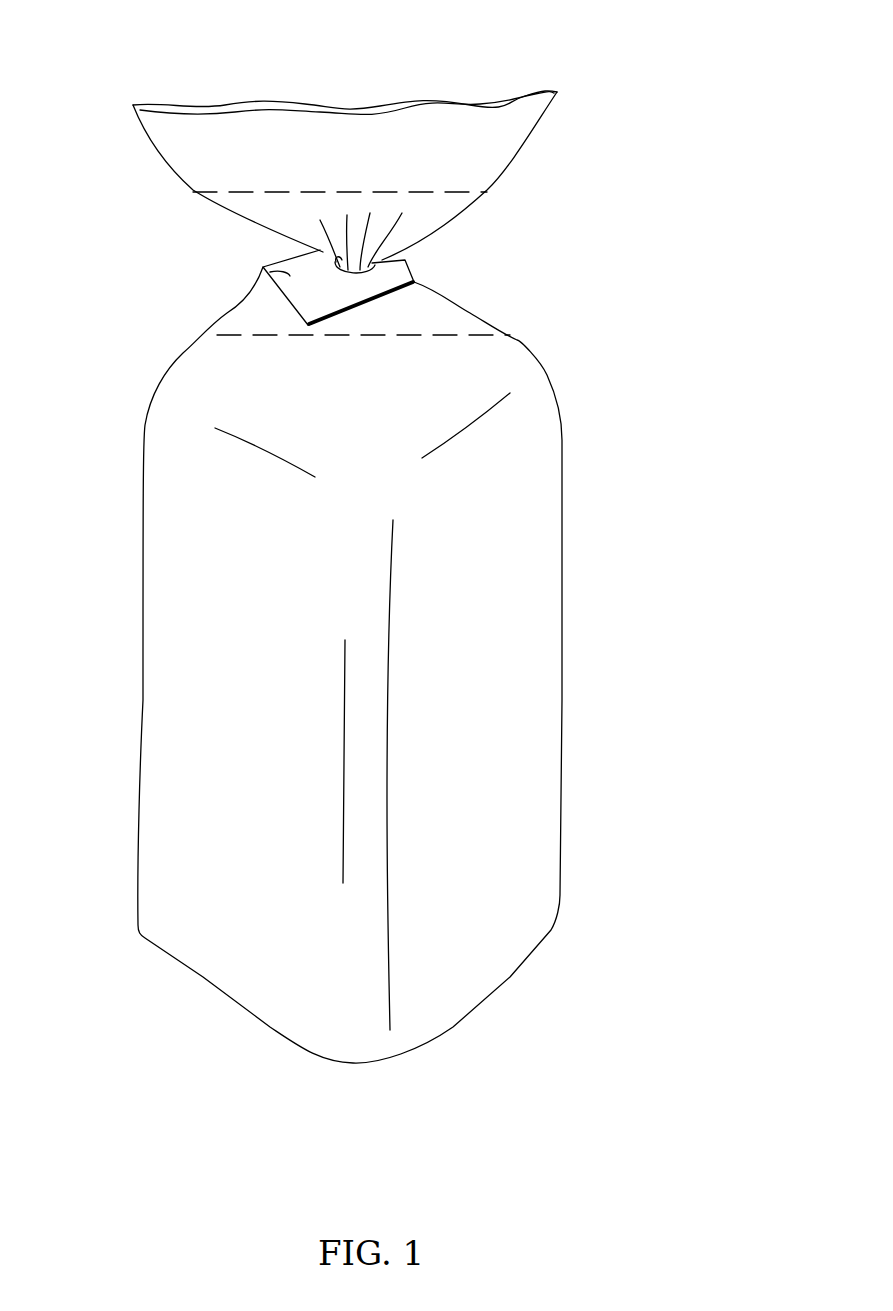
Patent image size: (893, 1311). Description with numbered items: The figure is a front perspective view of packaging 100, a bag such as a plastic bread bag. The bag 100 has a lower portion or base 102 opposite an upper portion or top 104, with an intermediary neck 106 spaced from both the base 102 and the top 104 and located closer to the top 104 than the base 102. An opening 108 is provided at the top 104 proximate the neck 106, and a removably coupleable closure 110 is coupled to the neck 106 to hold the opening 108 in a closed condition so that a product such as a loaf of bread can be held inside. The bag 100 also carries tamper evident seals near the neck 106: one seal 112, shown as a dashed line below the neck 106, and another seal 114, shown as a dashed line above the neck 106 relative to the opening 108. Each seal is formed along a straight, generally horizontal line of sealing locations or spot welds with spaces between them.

The packaging 100 is at (617, 152).
The base 102 is at (505, 980).
The top 104 is at (158, 158).
The neck 106 is at (418, 260).
The opening 108 is at (388, 88).
The removably coupleable closure 110 is at (265, 268).
The tamper evident seal 112 is at (428, 338).
The tamper evident seal 114 is at (443, 190).